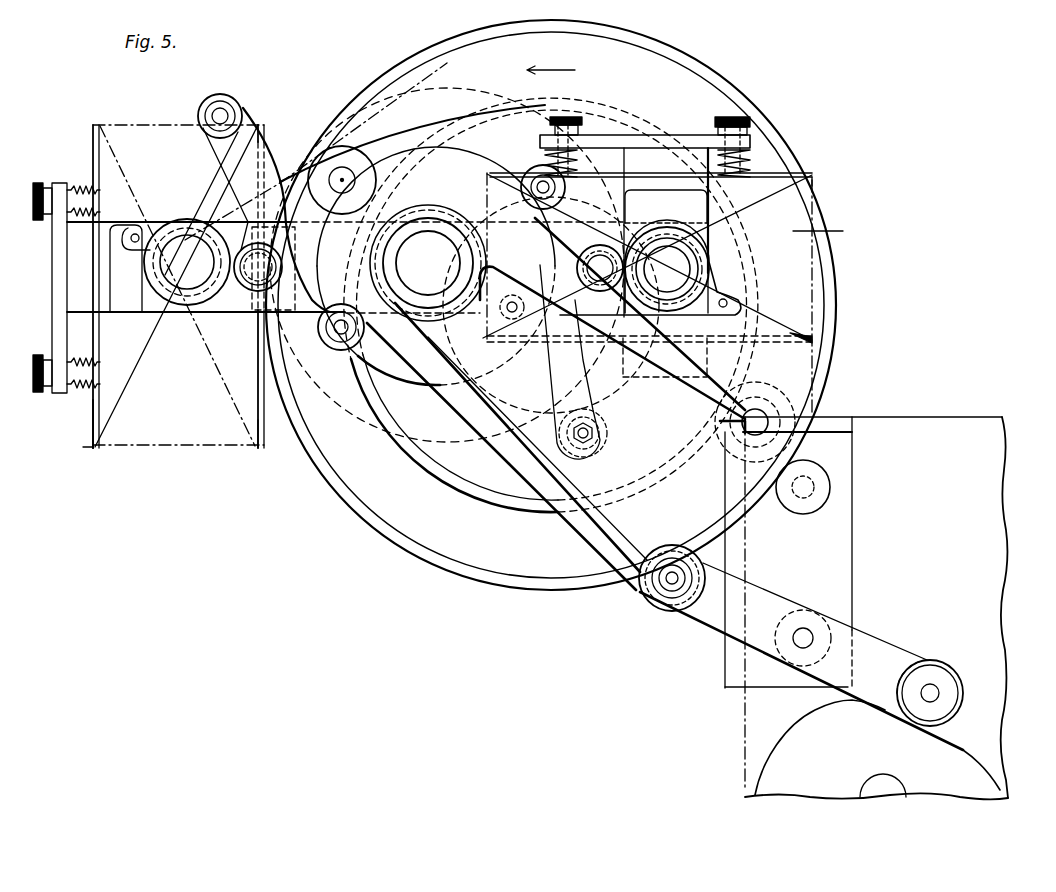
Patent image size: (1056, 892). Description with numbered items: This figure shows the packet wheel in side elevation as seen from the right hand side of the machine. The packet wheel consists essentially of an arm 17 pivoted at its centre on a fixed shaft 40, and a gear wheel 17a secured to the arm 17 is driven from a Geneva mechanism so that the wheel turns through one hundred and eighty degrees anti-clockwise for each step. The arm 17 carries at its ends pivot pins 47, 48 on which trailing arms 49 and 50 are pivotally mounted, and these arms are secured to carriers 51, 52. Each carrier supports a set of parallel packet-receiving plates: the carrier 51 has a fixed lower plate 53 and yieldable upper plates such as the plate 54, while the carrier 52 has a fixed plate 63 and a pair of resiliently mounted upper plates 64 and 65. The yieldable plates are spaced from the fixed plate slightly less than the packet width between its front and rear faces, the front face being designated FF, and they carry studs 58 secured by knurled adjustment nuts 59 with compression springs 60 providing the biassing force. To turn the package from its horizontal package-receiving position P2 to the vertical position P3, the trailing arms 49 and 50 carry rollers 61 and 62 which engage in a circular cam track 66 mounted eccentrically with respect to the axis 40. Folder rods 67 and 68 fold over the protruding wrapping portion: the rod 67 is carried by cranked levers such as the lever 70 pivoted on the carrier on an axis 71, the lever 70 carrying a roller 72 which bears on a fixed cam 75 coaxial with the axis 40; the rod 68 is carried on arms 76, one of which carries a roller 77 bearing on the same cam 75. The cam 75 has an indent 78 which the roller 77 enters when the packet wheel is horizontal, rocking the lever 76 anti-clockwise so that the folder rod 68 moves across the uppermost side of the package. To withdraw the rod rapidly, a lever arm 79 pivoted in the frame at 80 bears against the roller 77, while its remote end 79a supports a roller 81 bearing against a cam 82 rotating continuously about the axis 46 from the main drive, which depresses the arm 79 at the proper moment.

The arm 17 is at (412, 186).
The gear wheel 17a is at (468, 76).
The fixed shaft 40 is at (433, 257).
The axis 46 is at (880, 793).
The pivot pin 47 is at (693, 268).
The pivot pin 48 is at (182, 248).
The trailing arm 49 is at (750, 374).
The trailing arm 50 is at (287, 178).
The carrier 51 is at (697, 207).
The carrier 52 is at (122, 297).
The lower plate 53 is at (795, 332).
The upper plate 54 is at (619, 170).
The stud 58 is at (562, 117).
The knurled adjustment nut 59 is at (567, 117).
The compression spring 60 is at (577, 162).
The roller 61 is at (780, 400).
The roller 62 is at (341, 146).
The fixed plate 63 is at (262, 447).
The upper plate 64 is at (92, 422).
The upper plate 65 is at (83, 447).
The circular cam track 66 is at (397, 82).
The folder rod 67 is at (597, 434).
The folder rod 68 is at (220, 106).
The cranked lever 70 is at (597, 399).
The axis 71 is at (585, 255).
The roller 72 is at (533, 170).
The fixed cam 75 is at (452, 148).
The arm 76 is at (268, 165).
The roller 77 is at (338, 352).
The indent 78 is at (387, 380).
The lever arm 79 is at (462, 414).
The remote end 79a is at (883, 657).
The pivot 80 is at (670, 588).
The roller 81 is at (960, 714).
The cam 82 is at (780, 738).
The front face FF is at (92, 405).
The package-receiving position P2 is at (674, 295).
The vertical position P3 is at (128, 136).